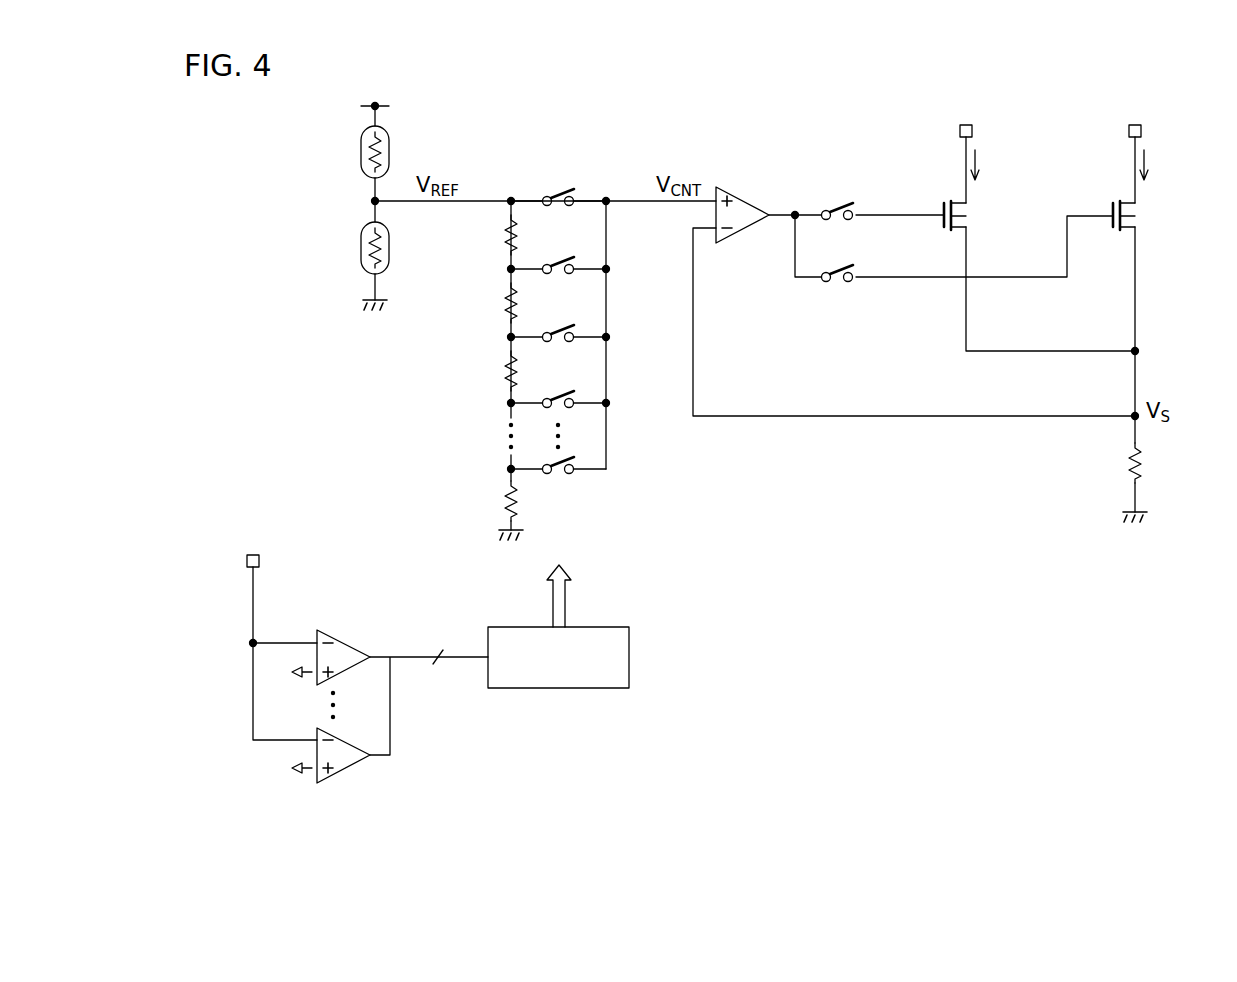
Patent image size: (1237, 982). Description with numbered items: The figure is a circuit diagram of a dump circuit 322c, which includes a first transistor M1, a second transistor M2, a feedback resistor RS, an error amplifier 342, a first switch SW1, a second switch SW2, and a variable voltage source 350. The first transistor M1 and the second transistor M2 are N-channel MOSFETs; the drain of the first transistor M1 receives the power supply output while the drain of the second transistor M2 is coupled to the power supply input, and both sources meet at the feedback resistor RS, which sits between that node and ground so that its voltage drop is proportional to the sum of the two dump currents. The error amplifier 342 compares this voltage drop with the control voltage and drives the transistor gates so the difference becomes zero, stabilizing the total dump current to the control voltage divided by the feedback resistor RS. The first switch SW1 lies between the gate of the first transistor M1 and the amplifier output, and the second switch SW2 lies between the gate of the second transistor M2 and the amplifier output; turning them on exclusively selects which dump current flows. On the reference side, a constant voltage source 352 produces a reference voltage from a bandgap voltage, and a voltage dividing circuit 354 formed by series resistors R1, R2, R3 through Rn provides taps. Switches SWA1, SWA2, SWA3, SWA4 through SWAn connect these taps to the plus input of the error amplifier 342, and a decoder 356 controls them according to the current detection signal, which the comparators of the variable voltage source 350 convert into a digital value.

The error amplifier 342 is at (747, 193).
The variable voltage source 350 is at (230, 780).
The constant voltage source 352 is at (345, 312).
The voltage dividing circuit 354 is at (530, 387).
The decoder 356 is at (630, 647).
The dump circuit 322c is at (725, 857).
The first transistor M1 is at (1143, 212).
The second transistor M2 is at (976, 212).
The first switch SW1 is at (836, 285).
The second switch SW2 is at (836, 203).
The feedback resistor RS is at (1145, 462).
The resistor R1 is at (501, 243).
The resistor R2 is at (501, 311).
The resistor R3 is at (501, 378).
The resistor Rn is at (501, 505).
The switch SWA1 is at (554, 191).
The switch SWA2 is at (554, 259).
The switch SWA3 is at (554, 327).
The switch SWA4 is at (554, 393).
The switch SWAn is at (562, 480).